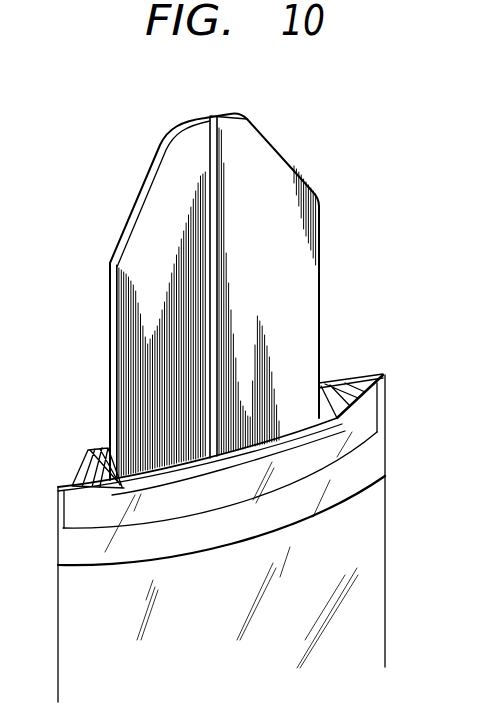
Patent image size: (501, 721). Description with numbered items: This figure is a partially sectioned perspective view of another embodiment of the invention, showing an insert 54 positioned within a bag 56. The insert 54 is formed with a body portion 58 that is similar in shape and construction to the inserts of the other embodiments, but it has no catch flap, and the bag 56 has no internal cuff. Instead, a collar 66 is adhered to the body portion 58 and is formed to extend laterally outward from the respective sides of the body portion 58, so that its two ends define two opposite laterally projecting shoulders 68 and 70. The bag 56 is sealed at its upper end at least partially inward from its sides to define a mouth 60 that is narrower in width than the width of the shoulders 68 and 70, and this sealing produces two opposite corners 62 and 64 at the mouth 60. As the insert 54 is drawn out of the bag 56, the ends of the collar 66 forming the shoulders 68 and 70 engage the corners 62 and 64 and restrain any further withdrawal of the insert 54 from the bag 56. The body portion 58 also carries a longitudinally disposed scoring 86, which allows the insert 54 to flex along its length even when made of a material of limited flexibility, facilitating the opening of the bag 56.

The insert 54 is at (293, 166).
The longitudinally disposed scoring 86 is at (214, 166).
The body portion 58 is at (277, 282).
The mouth 60 is at (165, 478).
The corner 64 is at (352, 390).
The corner 62 is at (86, 458).
The shoulder 70 is at (367, 415).
The shoulder 68 is at (62, 513).
The collar 66 is at (214, 493).
The bag 56 is at (330, 547).